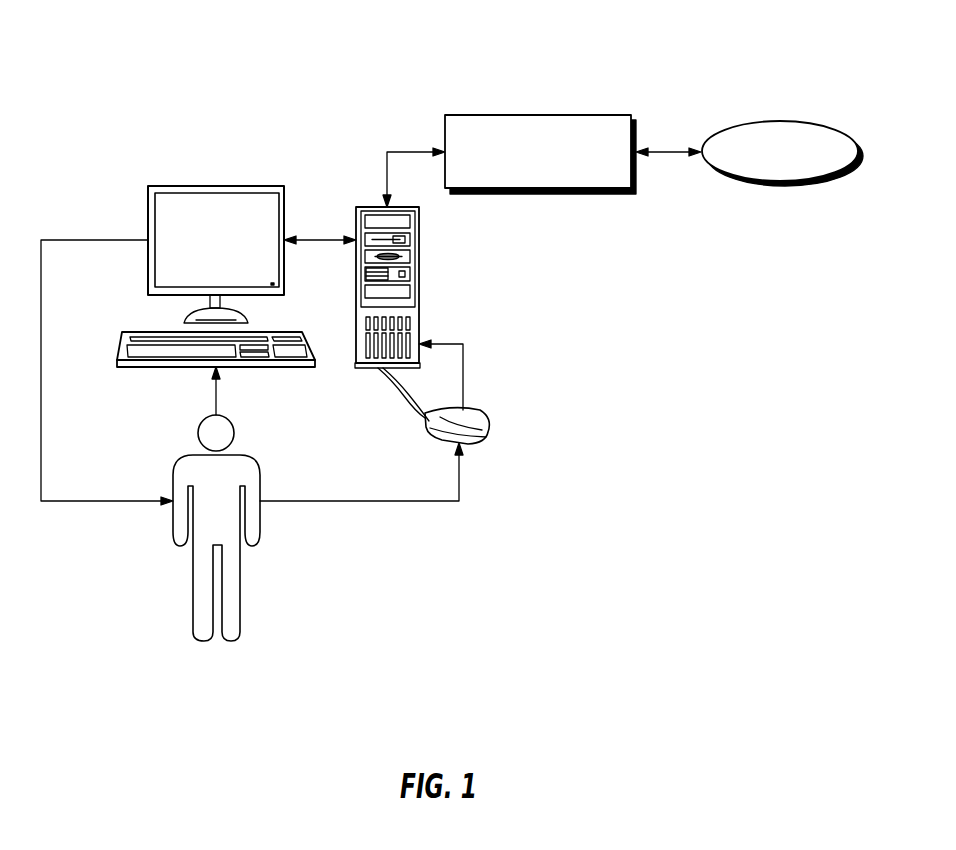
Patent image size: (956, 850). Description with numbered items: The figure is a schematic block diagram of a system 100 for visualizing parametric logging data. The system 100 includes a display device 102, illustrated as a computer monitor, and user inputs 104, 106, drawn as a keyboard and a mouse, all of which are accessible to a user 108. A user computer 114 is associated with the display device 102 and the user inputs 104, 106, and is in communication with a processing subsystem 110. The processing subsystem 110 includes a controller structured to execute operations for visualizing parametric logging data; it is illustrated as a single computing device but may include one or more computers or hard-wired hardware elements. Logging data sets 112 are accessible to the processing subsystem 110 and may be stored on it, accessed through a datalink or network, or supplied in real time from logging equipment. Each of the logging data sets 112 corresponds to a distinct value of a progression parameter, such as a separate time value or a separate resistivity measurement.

The system 100 is at (240, 52).
The display device 102 is at (215, 186).
The user input 104 is at (157, 332).
The user input 106 is at (467, 445).
The user 108 is at (253, 462).
The processing subsystem 110 is at (537, 115).
The logging data sets 112 is at (782, 120).
The user computer 114 is at (365, 207).